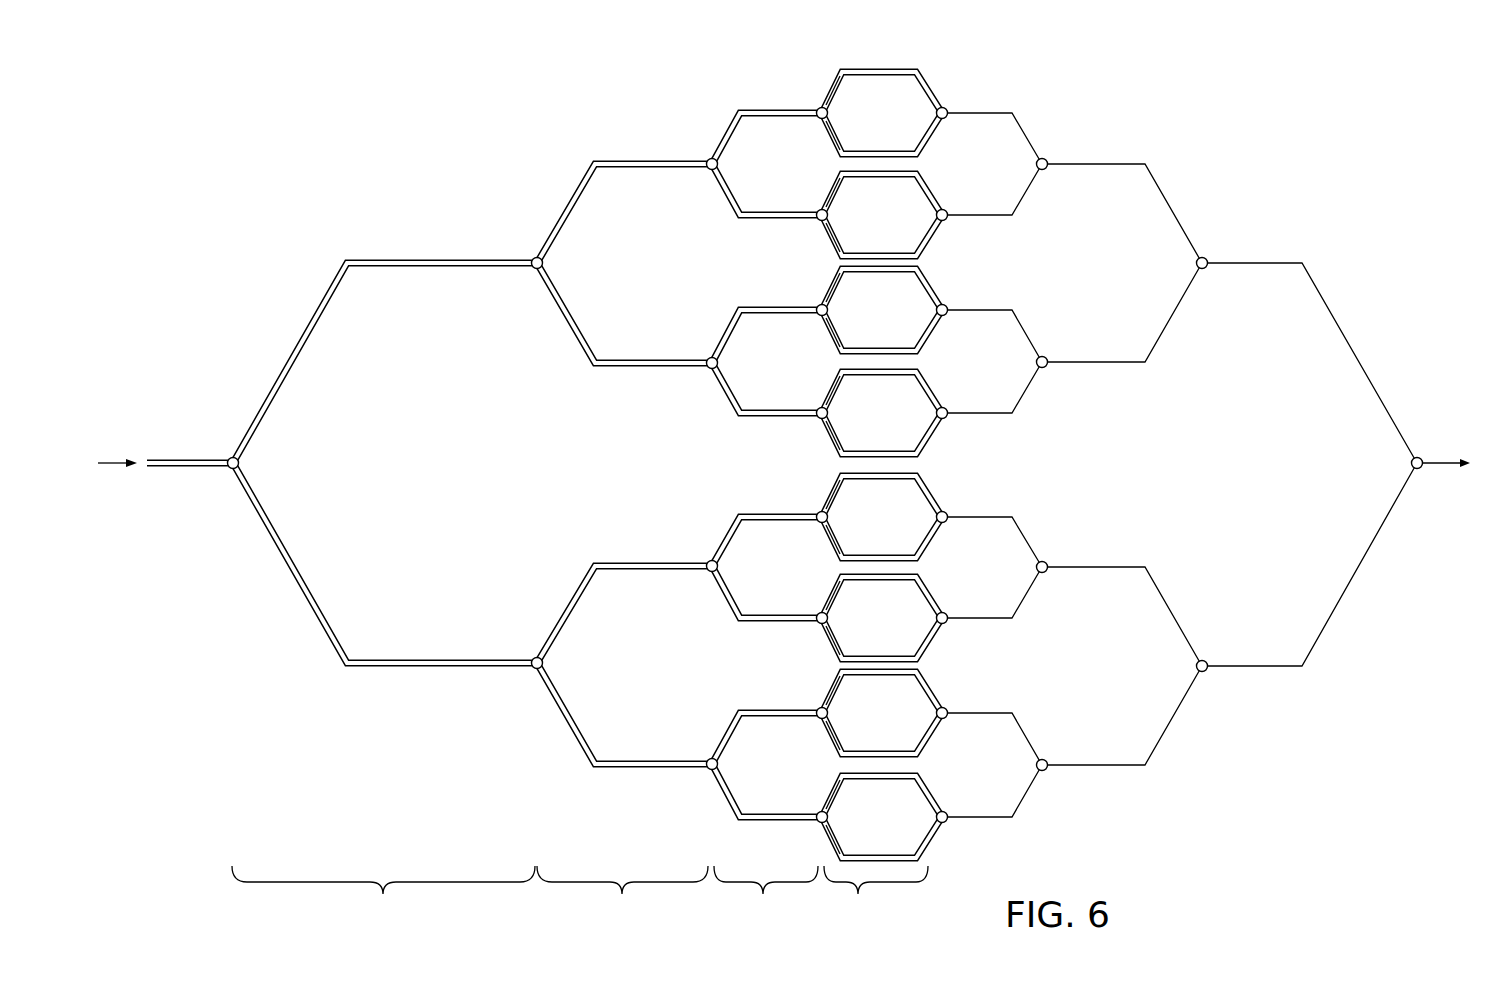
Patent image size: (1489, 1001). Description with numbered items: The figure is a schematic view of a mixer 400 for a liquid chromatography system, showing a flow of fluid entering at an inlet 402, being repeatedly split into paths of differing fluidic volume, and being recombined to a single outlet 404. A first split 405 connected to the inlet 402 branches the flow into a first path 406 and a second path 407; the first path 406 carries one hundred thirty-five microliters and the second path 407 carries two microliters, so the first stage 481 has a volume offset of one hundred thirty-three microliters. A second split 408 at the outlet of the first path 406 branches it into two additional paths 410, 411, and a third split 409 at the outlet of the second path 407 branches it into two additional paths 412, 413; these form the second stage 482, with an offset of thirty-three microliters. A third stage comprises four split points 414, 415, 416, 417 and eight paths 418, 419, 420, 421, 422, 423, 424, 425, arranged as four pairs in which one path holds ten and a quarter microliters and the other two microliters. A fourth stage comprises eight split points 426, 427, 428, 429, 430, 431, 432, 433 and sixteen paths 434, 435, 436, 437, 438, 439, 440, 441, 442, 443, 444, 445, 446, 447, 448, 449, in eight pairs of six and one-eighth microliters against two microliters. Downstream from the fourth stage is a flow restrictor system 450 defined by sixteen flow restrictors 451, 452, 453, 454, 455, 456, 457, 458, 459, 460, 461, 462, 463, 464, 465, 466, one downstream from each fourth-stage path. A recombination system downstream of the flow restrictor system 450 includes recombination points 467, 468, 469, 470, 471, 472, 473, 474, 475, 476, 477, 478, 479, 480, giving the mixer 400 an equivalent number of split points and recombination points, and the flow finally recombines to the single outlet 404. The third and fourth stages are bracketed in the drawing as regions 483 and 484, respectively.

The mixer 400 is at (442, 143).
The inlet 402 is at (152, 458).
The outlet 404 is at (1440, 467).
The first split 405 is at (228, 456).
The first path 406 is at (301, 335).
The second path 407 is at (301, 593).
The second split 408 is at (533, 258).
The third split 409 is at (534, 670).
The path 410 is at (624, 160).
The path 411 is at (607, 368).
The path 412 is at (606, 562).
The path 413 is at (626, 770).
The split point 414 is at (708, 162).
The split point 415 is at (708, 366).
The split point 416 is at (708, 562).
The split point 417 is at (708, 766).
The path 418 is at (728, 136).
The path 419 is at (728, 195).
The path 420 is at (728, 330).
The path 421 is at (728, 398).
The path 422 is at (728, 540).
The path 423 is at (728, 600).
The path 424 is at (728, 740).
The path 425 is at (728, 800).
The split point 426 is at (815, 112).
The split point 427 is at (828, 215).
The split point 428 is at (815, 310).
The split point 429 is at (815, 418).
The split point 430 is at (815, 515).
The split point 431 is at (815, 620).
The split point 432 is at (828, 713).
The split point 433 is at (815, 819).
The path 434 is at (832, 87).
The path 435 is at (830, 141).
The path 436 is at (826, 206).
The path 437 is at (830, 227).
The path 438 is at (832, 282).
The path 439 is at (830, 340).
The path 440 is at (828, 404).
The path 441 is at (832, 433).
The path 442 is at (832, 488).
The path 443 is at (830, 536).
The path 444 is at (832, 592).
The path 445 is at (832, 648).
The path 446 is at (828, 705).
The path 447 is at (830, 733).
The path 448 is at (832, 789).
The path 449 is at (832, 846).
The flow restrictor system 450 is at (1038, 112).
The flow restrictor 451 is at (925, 81).
The flow restrictor 452 is at (923, 143).
The flow restrictor 453 is at (925, 184).
The flow restrictor 454 is at (923, 246).
The flow restrictor 455 is at (925, 279).
The flow restrictor 456 is at (923, 343).
The flow restrictor 457 is at (925, 381).
The flow restrictor 458 is at (923, 443).
The flow restrictor 459 is at (928, 498).
The flow restrictor 460 is at (922, 553).
The flow restrictor 461 is at (928, 598).
The flow restrictor 462 is at (922, 653).
The flow restrictor 463 is at (928, 693).
The flow restrictor 464 is at (922, 748).
The flow restrictor 465 is at (928, 798).
The flow restrictor 466 is at (922, 850).
The recombination point 467 is at (947, 112).
The recombination point 468 is at (947, 214).
The recombination point 469 is at (947, 309).
The recombination point 470 is at (947, 412).
The recombination point 471 is at (947, 521).
The recombination point 472 is at (947, 621).
The recombination point 473 is at (947, 717).
The recombination point 474 is at (947, 820).
The recombination point 475 is at (1046, 359).
The recombination point 476 is at (1046, 571).
The recombination point 477 is at (1046, 768).
The recombination point 478 is at (1208, 260).
The recombination point 479 is at (1208, 670).
The recombination point 480 is at (1424, 460).
The first stage 481 is at (383, 896).
The second stage 482 is at (622, 896).
The third stage 483 is at (766, 896).
The fourth stage 484 is at (876, 896).